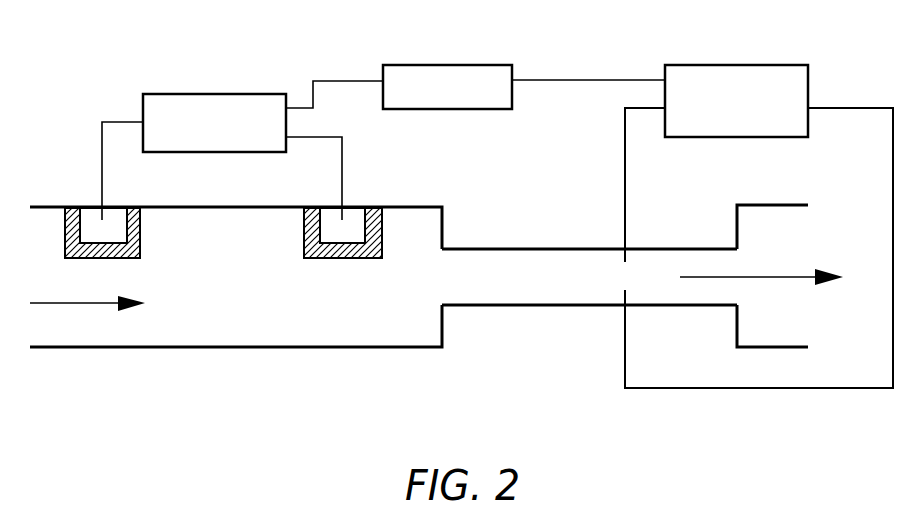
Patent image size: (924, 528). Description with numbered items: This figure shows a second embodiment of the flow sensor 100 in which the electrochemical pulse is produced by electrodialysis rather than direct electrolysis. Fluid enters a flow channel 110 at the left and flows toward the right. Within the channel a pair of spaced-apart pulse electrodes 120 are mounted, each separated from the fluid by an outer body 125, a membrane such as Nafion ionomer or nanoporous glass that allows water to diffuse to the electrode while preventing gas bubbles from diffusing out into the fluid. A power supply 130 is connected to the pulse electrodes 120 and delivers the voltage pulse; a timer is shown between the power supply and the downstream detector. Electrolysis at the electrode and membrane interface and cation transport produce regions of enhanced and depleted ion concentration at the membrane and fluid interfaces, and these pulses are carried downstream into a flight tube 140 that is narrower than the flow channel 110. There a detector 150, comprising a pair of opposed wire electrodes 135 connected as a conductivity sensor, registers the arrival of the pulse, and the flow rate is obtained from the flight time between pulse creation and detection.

The flow sensor 100 is at (107, 54).
The flow channel 110 is at (229, 330).
The pulse electrodes 120 is at (102, 162).
The outer body 125 is at (305, 242).
The power supply 130 is at (285, 118).
The wire electrodes 135 is at (623, 178).
The flight tube 140 is at (525, 306).
The detector 150 is at (805, 92).